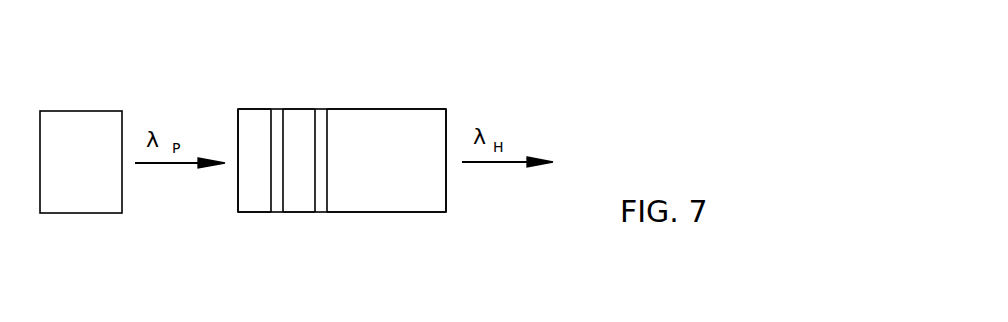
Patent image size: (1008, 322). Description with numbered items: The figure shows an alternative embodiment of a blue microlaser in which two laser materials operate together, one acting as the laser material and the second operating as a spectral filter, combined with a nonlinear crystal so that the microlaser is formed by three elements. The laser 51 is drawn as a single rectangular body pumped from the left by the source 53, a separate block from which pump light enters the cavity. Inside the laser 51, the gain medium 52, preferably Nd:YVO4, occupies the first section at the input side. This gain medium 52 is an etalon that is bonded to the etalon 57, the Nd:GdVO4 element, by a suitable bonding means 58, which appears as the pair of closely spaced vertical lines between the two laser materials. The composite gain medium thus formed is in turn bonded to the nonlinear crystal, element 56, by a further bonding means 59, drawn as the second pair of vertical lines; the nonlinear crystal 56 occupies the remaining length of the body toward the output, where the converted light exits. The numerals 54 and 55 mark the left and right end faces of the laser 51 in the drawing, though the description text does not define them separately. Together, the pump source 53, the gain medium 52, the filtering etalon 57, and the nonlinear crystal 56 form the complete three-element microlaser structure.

The laser 51 is at (345, 82).
The gain medium 52 is at (255, 118).
The source 53 is at (80, 111).
The input face 54 is at (238, 207).
The output face 55 is at (447, 200).
The nonlinear crystal 56 is at (408, 200).
The etalon 57 is at (301, 118).
The bonding means 58 is at (278, 208).
The bonding means 59 is at (322, 208).